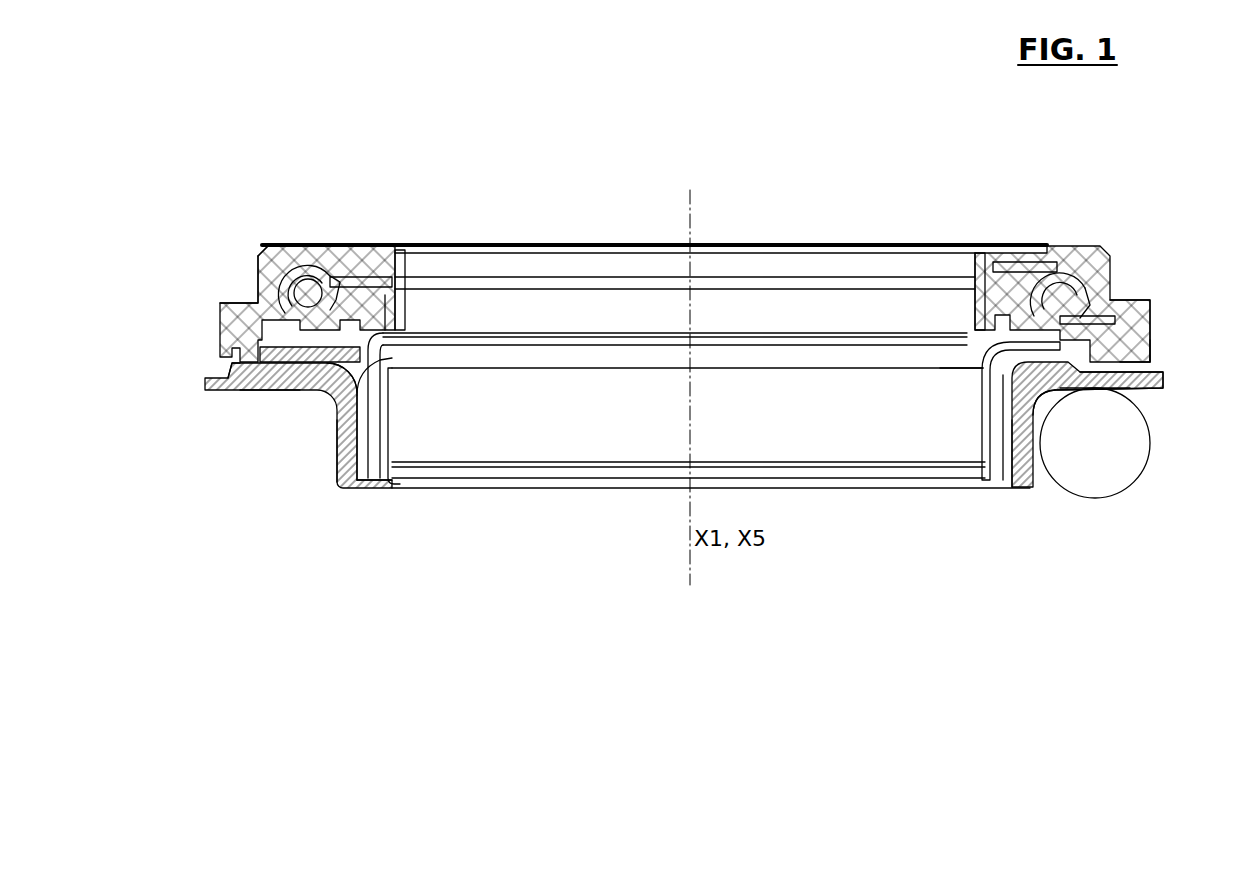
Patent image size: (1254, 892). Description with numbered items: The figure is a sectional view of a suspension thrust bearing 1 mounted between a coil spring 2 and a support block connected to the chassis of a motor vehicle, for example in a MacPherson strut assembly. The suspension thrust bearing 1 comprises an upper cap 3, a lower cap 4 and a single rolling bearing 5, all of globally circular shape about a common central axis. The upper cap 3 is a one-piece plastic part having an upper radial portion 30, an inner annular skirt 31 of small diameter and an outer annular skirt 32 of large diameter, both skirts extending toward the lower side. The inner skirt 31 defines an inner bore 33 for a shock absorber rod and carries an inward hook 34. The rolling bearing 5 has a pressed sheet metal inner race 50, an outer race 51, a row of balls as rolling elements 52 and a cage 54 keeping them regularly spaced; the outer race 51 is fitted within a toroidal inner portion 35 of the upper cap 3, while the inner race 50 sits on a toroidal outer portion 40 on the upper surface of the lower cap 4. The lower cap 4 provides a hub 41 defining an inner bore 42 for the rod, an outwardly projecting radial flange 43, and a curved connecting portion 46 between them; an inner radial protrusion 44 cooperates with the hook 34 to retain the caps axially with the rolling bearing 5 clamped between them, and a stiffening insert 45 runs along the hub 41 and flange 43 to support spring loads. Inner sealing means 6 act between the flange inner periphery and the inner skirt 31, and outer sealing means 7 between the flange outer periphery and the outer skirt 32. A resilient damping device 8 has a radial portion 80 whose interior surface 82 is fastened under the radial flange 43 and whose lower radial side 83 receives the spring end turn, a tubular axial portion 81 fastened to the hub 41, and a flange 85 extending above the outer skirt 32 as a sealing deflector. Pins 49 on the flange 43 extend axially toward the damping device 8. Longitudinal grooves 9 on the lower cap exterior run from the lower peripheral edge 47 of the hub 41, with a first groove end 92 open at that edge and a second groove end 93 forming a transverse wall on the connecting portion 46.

The suspension thrust bearing 1 is at (436, 226).
The coil spring 2 is at (1128, 485).
The upper cap 3 is at (260, 246).
The lower cap 4 is at (400, 421).
The rolling bearing 5 is at (324, 262).
The inner sealing means 6 is at (1003, 288).
The outer sealing means 7 is at (1162, 324).
The damping device 8 is at (228, 395).
The longitudinal grooves 9 is at (1033, 470).
The upper radial portion 30 is at (284, 248).
The inner annular skirt 31 is at (407, 298).
The outer annular skirt 32 is at (258, 292).
The inner bore 33 is at (950, 300).
The hook 34 is at (948, 362).
The toroidal inner portion 35 is at (1095, 290).
The toroidal outer portion 40 is at (322, 273).
The hub 41 is at (398, 404).
The inner bore 42 is at (975, 445).
The radial flange 43 is at (264, 370).
The inner radial protrusion 44 is at (398, 300).
The stiffening insert 45 is at (975, 428).
The curved connecting portion 46 is at (330, 385).
The lower peripheral edge 47 is at (372, 492).
The pins 49 is at (1160, 366).
The inner race 50 is at (1035, 275).
The outer race 51 is at (1108, 265).
The rolling elements 52 is at (299, 303).
The cage 54 is at (1062, 288).
The radial portion 80 is at (1085, 385).
The tubular axial portion 81 is at (338, 482).
The interior surface 82 is at (360, 356).
The lower radial side 83 is at (1140, 390).
The flange 85 is at (235, 372).
The first groove end 92 is at (1018, 485).
The second groove end 93 is at (1045, 400).